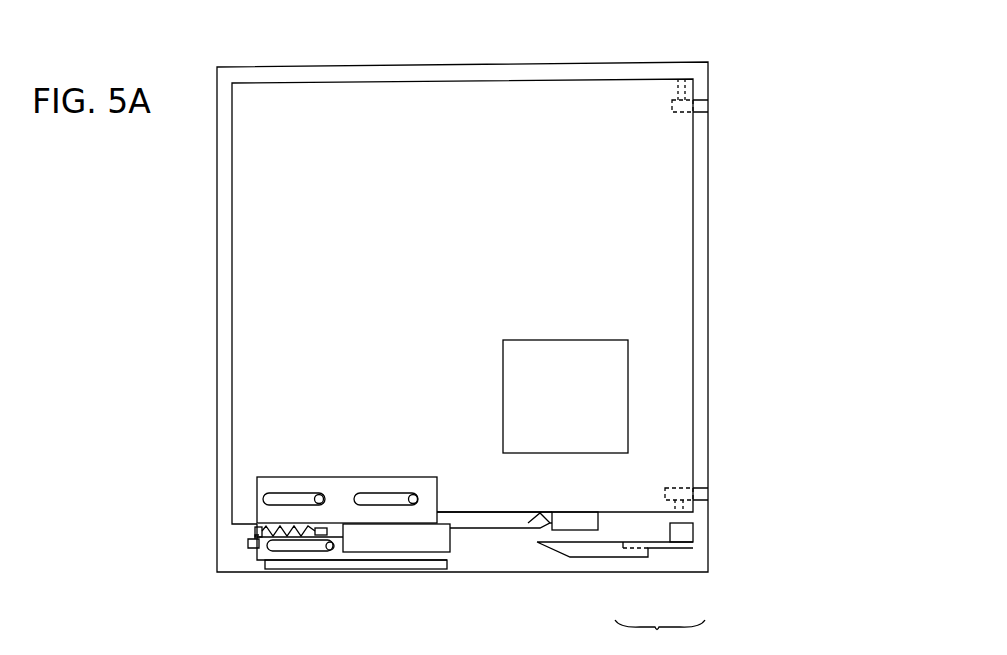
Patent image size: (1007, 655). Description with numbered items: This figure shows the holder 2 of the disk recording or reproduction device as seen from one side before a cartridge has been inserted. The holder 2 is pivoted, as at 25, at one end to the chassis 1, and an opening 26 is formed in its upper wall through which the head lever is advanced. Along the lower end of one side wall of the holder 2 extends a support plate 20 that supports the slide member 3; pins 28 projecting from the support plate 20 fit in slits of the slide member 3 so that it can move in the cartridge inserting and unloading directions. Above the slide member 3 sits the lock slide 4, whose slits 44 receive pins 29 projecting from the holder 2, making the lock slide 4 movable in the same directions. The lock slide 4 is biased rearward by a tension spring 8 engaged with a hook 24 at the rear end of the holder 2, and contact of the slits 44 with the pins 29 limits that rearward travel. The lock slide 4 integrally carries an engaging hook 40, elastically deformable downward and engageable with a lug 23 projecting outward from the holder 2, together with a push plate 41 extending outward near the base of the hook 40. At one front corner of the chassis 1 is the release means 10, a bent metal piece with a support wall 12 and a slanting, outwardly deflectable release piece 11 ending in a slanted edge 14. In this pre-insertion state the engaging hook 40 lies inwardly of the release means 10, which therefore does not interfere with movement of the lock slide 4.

The chassis 1 is at (316, 75).
The holder 2 is at (672, 244).
The slide member 3 is at (292, 555).
The lock slide 4 is at (348, 485).
The tension spring 8 is at (278, 538).
The release means 10 is at (660, 637).
The release piece 11 is at (617, 557).
The support wall 12 is at (667, 548).
The edge 14 is at (552, 553).
The support plate 20 is at (375, 565).
The lug 23 is at (573, 520).
The hook 24 is at (248, 543).
The pivot 25 is at (673, 93).
The opening 26 is at (628, 374).
The pin 28 is at (327, 546).
The pin 29 is at (318, 492).
The engaging hook 40 is at (493, 526).
The push plate 41 is at (445, 540).
The slit 44 is at (283, 492).